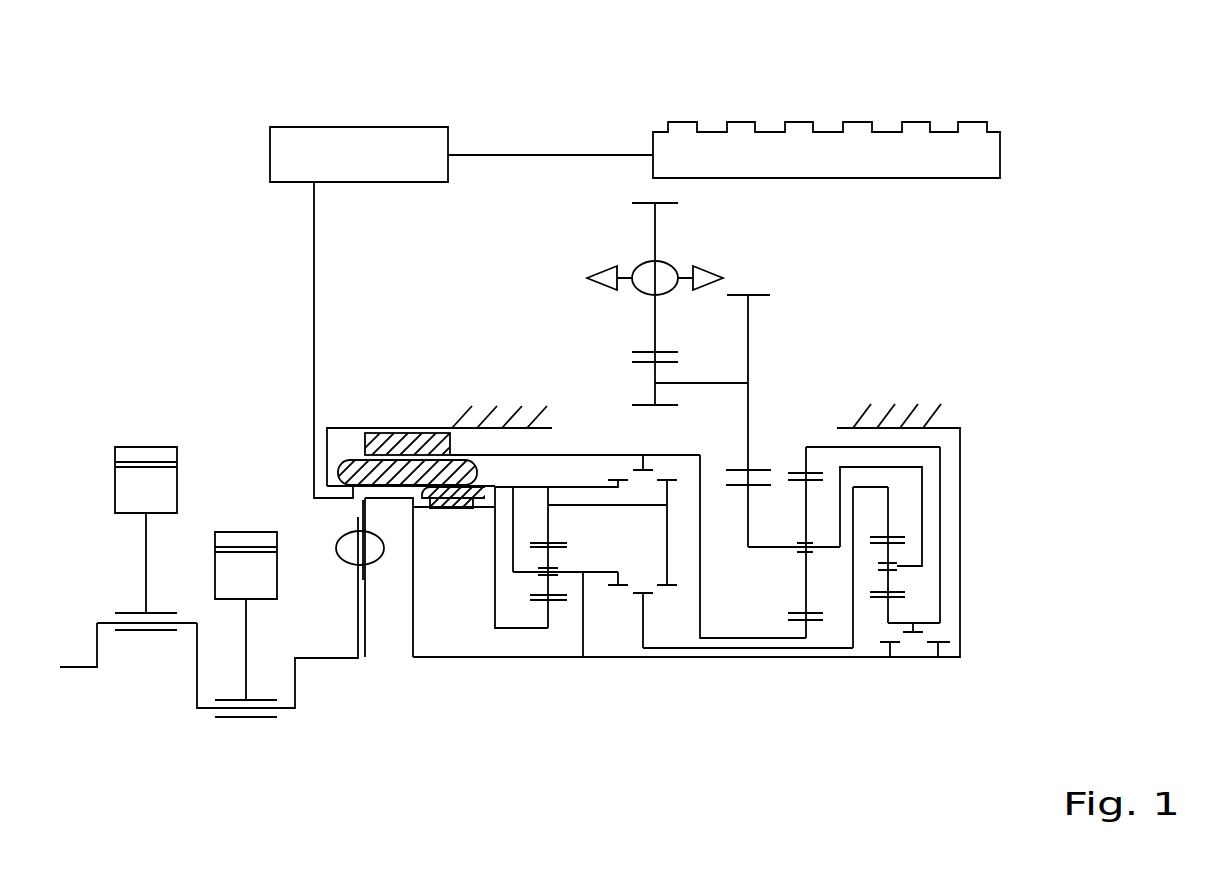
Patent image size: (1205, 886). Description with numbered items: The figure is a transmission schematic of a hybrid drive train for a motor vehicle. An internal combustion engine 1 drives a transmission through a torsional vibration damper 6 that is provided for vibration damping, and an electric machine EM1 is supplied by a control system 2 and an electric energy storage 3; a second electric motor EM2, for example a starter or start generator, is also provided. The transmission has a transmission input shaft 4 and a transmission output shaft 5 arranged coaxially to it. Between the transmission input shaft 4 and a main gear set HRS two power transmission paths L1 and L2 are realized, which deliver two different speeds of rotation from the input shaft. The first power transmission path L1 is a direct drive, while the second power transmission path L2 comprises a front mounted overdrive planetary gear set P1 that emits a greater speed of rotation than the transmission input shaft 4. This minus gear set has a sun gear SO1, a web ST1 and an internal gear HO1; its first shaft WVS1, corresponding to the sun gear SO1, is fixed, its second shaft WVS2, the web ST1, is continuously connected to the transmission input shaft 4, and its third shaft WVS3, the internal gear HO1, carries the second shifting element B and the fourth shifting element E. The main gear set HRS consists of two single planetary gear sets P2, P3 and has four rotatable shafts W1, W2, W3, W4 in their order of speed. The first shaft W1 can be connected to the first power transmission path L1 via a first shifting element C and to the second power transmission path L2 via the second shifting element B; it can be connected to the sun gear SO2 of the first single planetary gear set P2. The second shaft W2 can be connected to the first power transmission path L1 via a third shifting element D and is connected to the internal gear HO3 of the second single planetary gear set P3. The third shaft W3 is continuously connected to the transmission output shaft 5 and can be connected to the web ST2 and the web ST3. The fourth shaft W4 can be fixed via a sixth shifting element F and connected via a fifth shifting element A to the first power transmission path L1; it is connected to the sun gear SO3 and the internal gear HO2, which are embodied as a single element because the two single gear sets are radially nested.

The internal combustion engine 1 is at (186, 408).
The control system 2 is at (317, 150).
The electric energy storage 3 is at (798, 155).
The transmission input shaft 4 is at (537, 658).
The transmission output shaft 5 is at (752, 550).
The torsional vibration damper 6 is at (345, 553).
The electric machine EM1 is at (401, 398).
The second electric motor EM2 is at (446, 528).
The internal gear HO1 is at (543, 542).
The internal gear HO2 is at (817, 473).
The internal gear HO3 is at (900, 537).
The sun gear SO1 is at (550, 600).
The sun gear SO2 is at (818, 620).
The sun gear SO3 is at (900, 597).
The web ST1 is at (537, 573).
The web ST2 is at (818, 547).
The web ST3 is at (922, 566).
The first shaft W1 is at (718, 640).
The second shaft W2 is at (854, 600).
The third shaft W3 is at (900, 563).
The fourth shaft W4 is at (940, 583).
The first shaft WVS1 is at (492, 587).
The second shaft WVS2 is at (597, 573).
The third shaft WVS3 is at (613, 478).
The fifth shifting element A is at (892, 645).
The second shifting element B is at (673, 480).
The first shifting element C is at (597, 485).
The third shifting element D is at (640, 610).
The fourth shifting element E is at (667, 595).
The sixth shifting element F is at (933, 645).
The overdrive planetary gear set P1 is at (550, 372).
The first single planetary gear set P2 is at (805, 372).
The second single planetary gear set P3 is at (886, 372).
The main gear set HRS is at (906, 302).
The first power transmission path L1 is at (580, 473).
The second power transmission path L2 is at (646, 527).